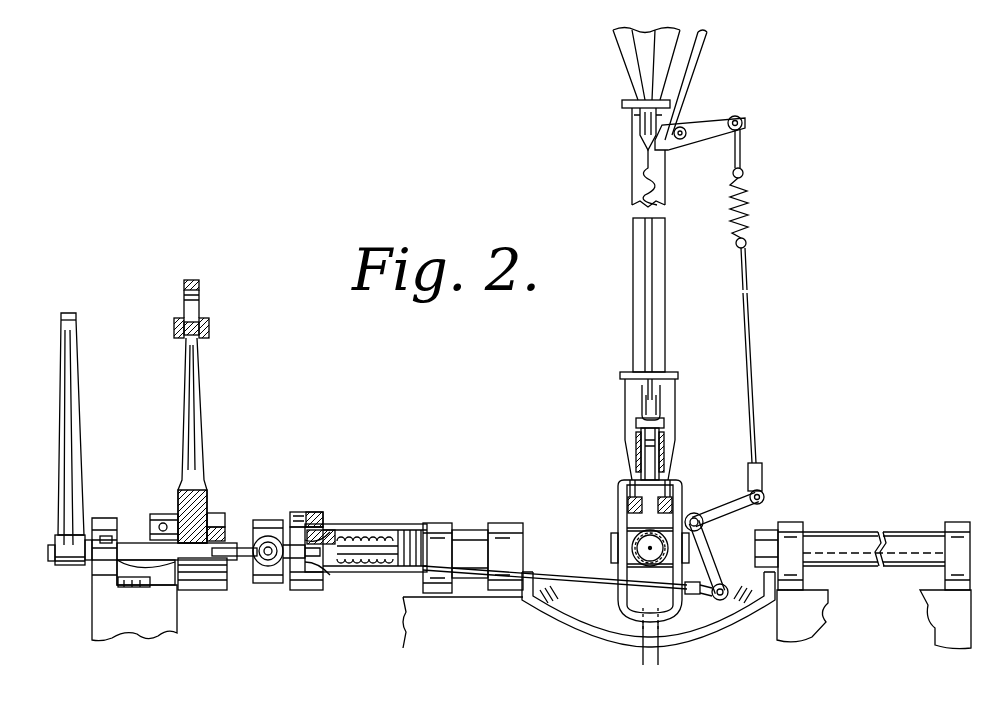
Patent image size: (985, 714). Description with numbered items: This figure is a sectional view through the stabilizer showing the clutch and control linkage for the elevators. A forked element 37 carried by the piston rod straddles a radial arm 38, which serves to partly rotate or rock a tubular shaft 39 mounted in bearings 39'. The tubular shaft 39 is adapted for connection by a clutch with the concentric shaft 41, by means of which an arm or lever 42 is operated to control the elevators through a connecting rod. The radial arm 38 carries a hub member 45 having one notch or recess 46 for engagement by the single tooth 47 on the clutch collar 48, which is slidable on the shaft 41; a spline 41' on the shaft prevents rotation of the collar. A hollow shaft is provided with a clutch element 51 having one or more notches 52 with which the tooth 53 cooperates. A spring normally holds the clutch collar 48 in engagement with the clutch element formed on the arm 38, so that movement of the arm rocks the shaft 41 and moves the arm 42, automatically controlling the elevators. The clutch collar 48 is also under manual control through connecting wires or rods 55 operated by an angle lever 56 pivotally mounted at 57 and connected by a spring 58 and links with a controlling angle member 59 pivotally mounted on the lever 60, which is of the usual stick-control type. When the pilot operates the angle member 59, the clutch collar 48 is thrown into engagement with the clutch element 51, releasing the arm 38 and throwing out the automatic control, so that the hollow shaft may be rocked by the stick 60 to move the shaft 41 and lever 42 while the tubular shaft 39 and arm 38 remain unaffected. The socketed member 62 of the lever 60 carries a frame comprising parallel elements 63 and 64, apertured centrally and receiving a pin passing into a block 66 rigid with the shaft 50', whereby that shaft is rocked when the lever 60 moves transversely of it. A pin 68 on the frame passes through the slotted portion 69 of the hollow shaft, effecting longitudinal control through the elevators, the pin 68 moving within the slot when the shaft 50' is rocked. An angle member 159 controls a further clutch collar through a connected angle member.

The forked element 37 is at (206, 325).
The radial arm 38 is at (203, 418).
The shaft 39 is at (159, 556).
The bearings 39' is at (107, 498).
The concentric shaft 41 is at (56, 565).
The spline 41' is at (187, 580).
The arm or lever 42 is at (78, 424).
The hub member 45 is at (236, 520).
The notch or recess 46 is at (247, 520).
The single tooth 47 is at (262, 521).
The clutch collar 48 is at (285, 522).
The shaft 50' is at (650, 571).
The clutch element 51 is at (342, 528).
The notches 52 is at (320, 520).
The tooth 53 is at (305, 515).
The connecting wires or rods 55 is at (583, 578).
The angle lever 56 is at (708, 540).
The pivot 57 is at (696, 512).
The spring 58 is at (752, 192).
The controlling angle member 59 is at (705, 122).
The lever 60 is at (668, 253).
The socketed member 62 is at (668, 401).
The parallel element 63 is at (618, 573).
The parallel element 64 is at (715, 566).
The block 66 is at (633, 530).
The pin 68 is at (652, 658).
The slotted portion 69 is at (599, 632).
The angle member 159 is at (633, 448).